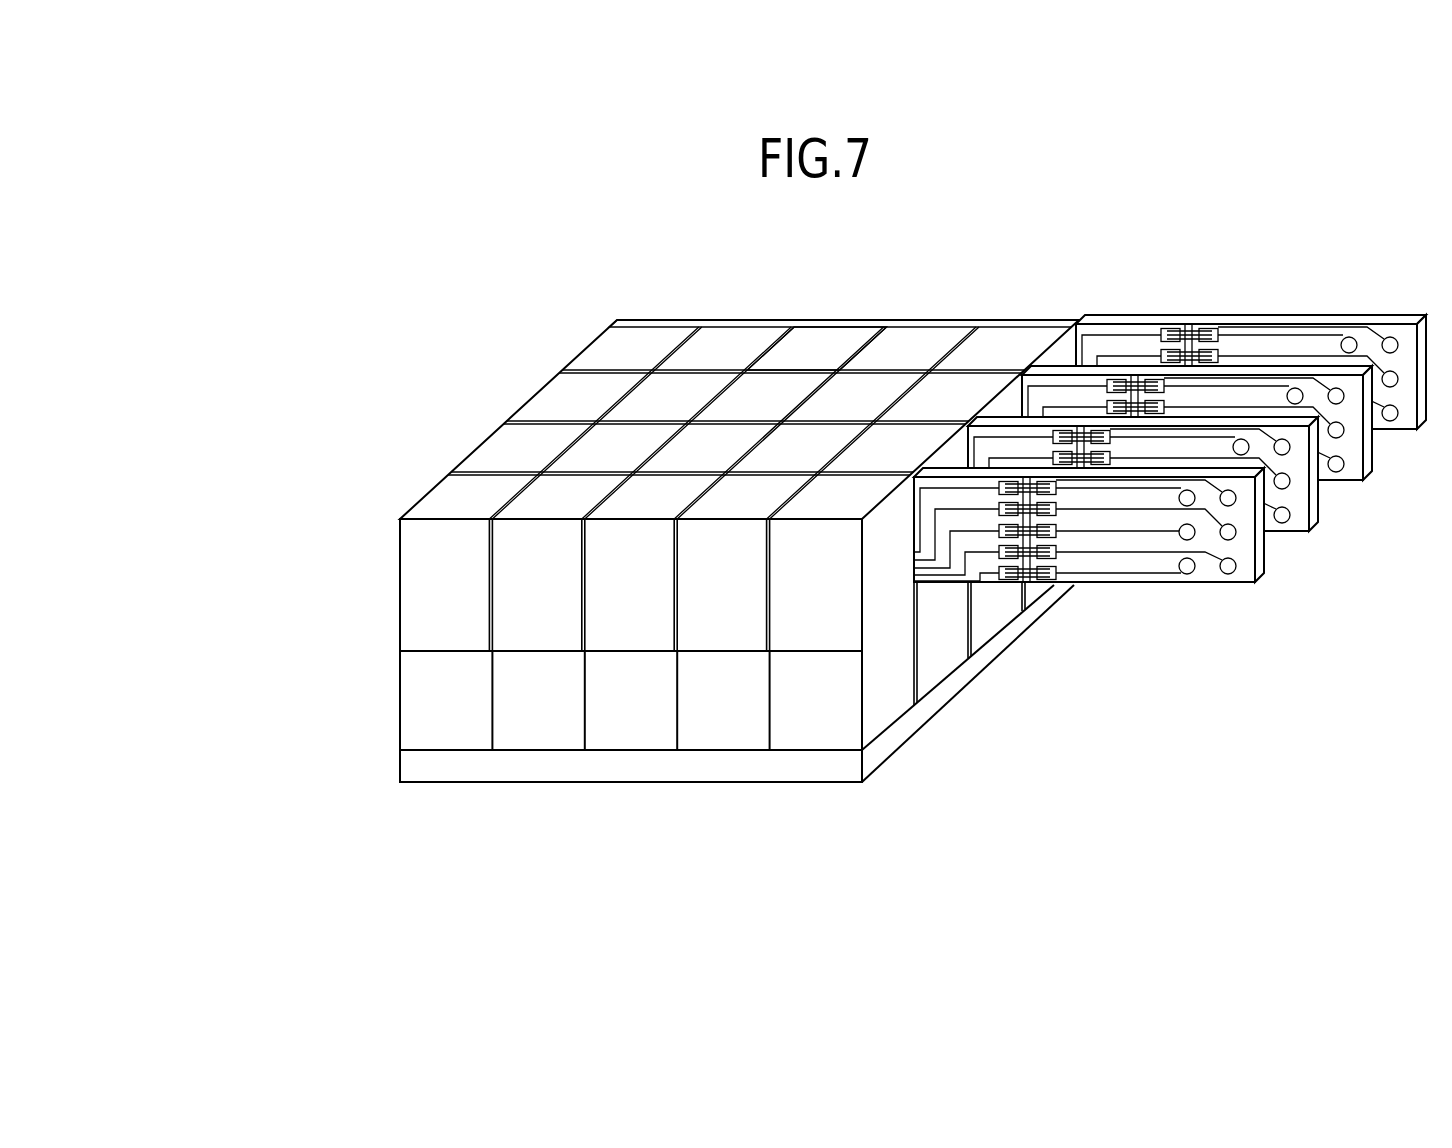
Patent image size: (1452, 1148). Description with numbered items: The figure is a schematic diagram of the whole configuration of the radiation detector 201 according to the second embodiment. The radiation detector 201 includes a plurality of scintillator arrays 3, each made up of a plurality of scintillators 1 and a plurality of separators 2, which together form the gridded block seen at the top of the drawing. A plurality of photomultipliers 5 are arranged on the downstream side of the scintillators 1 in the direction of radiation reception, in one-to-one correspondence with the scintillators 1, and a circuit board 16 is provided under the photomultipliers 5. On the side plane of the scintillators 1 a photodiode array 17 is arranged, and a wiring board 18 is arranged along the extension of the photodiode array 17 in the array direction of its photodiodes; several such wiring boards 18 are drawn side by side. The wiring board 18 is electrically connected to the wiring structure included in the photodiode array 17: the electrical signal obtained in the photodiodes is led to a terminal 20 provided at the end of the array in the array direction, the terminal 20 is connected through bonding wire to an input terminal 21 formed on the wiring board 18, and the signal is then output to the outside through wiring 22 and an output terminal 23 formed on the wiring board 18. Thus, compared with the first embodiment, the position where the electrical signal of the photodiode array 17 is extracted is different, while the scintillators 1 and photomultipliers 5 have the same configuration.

The radiation detector 201 is at (1050, 216).
The photodiode array 17 is at (648, 318).
The scintillator array 3 is at (568, 334).
The scintillator 1 is at (847, 334).
The separator 2 is at (493, 566).
The photomultiplier 5 is at (425, 698).
The circuit board 16 is at (729, 767).
The wiring board 18 is at (1271, 322).
The terminal 20 is at (1002, 584).
The input terminal 21 is at (1050, 586).
The wiring 22 is at (1135, 576).
The output terminal 23 is at (1232, 570).